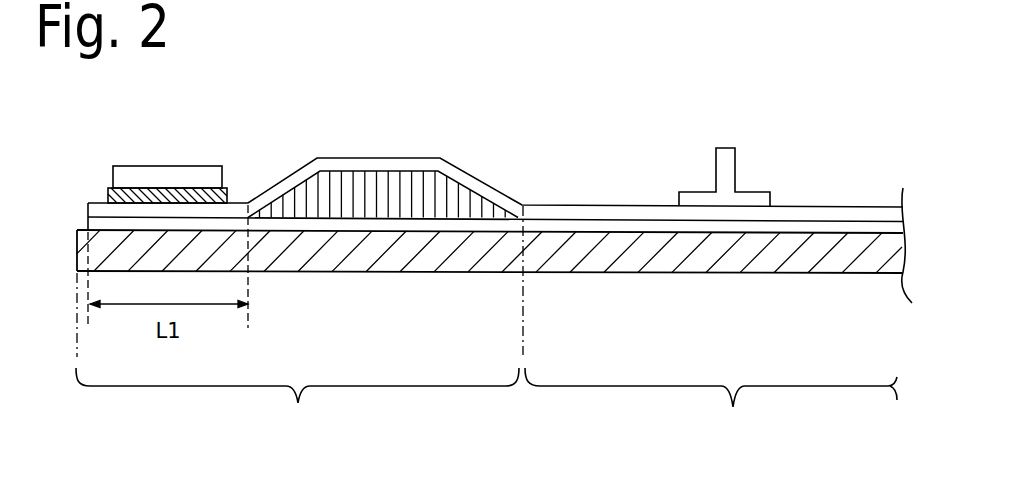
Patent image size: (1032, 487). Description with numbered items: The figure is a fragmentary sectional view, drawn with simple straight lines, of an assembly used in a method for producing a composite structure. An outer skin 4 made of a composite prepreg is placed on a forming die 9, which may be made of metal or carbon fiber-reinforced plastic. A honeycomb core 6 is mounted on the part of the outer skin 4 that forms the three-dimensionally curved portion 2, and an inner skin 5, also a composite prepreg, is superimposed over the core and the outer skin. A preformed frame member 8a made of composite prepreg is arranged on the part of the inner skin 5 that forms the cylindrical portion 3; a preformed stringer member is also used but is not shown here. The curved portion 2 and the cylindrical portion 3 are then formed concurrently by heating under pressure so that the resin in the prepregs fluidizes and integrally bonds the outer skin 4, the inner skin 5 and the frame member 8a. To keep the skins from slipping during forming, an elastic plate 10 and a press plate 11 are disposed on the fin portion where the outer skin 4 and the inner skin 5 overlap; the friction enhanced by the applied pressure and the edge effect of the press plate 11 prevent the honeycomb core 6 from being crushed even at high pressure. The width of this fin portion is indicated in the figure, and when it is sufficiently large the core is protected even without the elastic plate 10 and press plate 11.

The three-dimensionally curved portion 2 is at (297, 404).
The cylindrical portion 3 is at (711, 403).
The outer skin 4 is at (845, 230).
The inner skin 5 is at (803, 215).
The honeycomb core 6 is at (368, 177).
The preformed frame member 8a is at (727, 163).
The forming die 9 is at (462, 258).
The elastic plate 10 is at (180, 190).
The press plate 11 is at (147, 176).